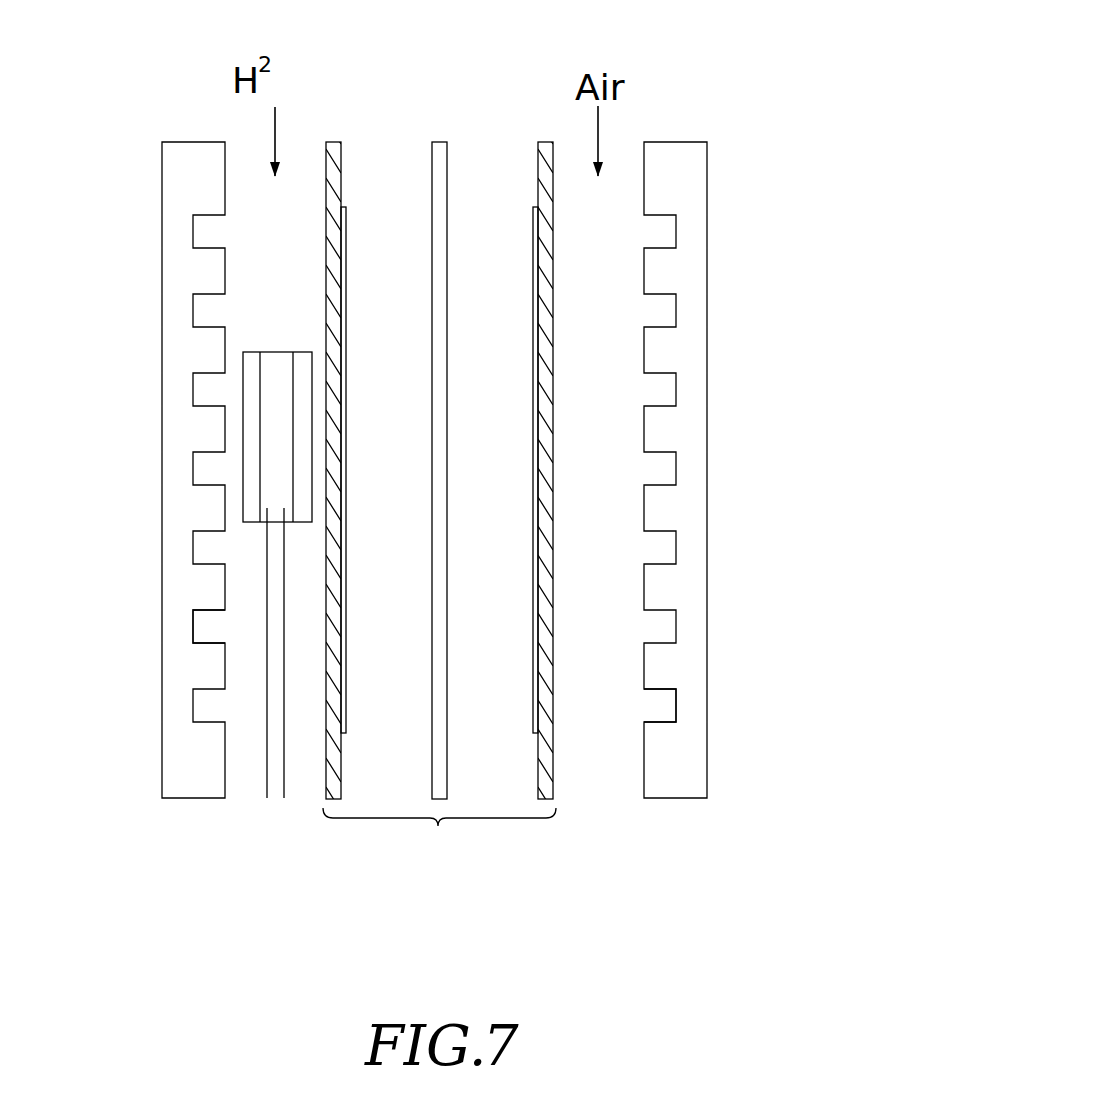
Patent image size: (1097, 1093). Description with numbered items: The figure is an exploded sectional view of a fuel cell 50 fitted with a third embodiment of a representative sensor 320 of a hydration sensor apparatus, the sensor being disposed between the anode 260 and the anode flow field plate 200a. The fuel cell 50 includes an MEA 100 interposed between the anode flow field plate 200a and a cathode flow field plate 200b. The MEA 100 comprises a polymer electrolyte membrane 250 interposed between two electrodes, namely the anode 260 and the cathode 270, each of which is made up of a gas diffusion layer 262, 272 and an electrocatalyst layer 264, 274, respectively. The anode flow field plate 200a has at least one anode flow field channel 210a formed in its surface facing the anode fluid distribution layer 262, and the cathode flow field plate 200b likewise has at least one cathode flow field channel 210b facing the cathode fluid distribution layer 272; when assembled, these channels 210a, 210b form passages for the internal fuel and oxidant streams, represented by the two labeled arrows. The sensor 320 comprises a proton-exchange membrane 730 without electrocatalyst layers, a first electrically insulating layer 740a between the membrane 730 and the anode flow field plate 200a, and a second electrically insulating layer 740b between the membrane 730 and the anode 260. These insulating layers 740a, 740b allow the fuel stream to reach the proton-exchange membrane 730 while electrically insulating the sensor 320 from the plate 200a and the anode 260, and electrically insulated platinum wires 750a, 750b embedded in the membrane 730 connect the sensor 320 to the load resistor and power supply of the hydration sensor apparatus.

The fuel cell 50 is at (664, 77).
The MEA 100 is at (438, 826).
The anode flow field plate 200a is at (193, 778).
The cathode flow field plate 200b is at (678, 784).
The anode flow field channel 210a is at (200, 629).
The cathode flow field channel 210b is at (665, 708).
The polymer electrolyte membrane 250 is at (432, 800).
The anode 260 is at (300, 492).
The gas diffusion layer 262 is at (326, 265).
The electrocatalyst layer 264 is at (347, 245).
The cathode 270 is at (594, 492).
The gas diffusion layer 272 is at (554, 242).
The electrocatalyst layer 274 is at (532, 245).
The sensor 320 is at (220, 505).
The proton-exchange membrane 730 is at (273, 352).
The first electrically insulating layer 740a is at (248, 400).
The second electrically insulating layer 740b is at (303, 395).
The electrically insulated platinum wire 750a is at (267, 668).
The electrically insulated platinum wire 750b is at (284, 718).